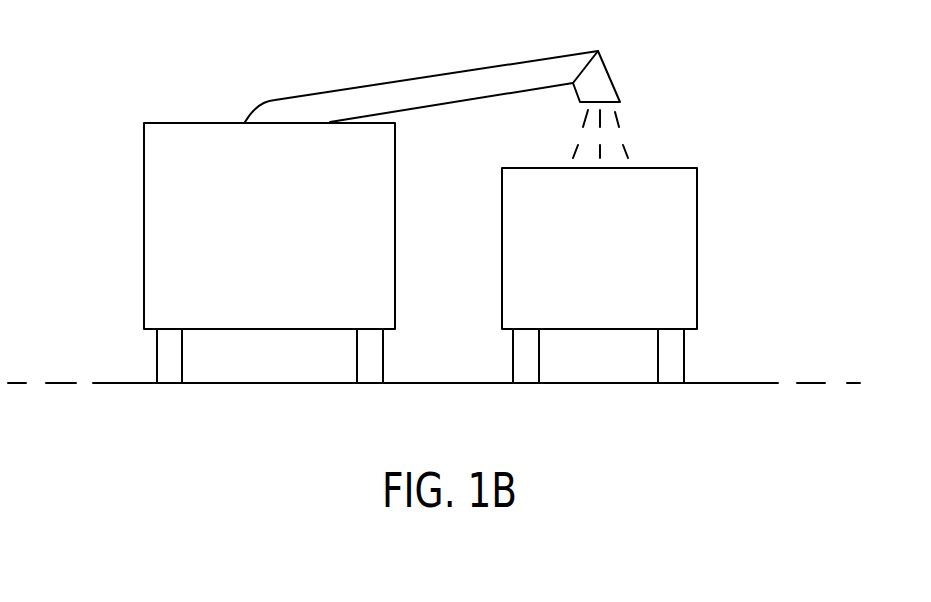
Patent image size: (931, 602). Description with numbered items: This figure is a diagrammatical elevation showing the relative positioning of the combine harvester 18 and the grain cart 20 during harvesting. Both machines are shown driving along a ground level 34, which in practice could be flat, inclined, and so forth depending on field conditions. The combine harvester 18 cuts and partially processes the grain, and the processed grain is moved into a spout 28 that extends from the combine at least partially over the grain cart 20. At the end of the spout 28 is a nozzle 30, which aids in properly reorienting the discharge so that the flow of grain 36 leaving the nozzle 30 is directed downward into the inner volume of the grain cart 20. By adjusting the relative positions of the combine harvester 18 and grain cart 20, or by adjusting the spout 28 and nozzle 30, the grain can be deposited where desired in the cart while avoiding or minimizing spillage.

The combine harvester 18 is at (170, 258).
The grain cart 20 is at (663, 257).
The spout 28 is at (440, 75).
The nozzle 30 is at (611, 74).
The ground level 34 is at (450, 383).
The flow of grain 36 is at (618, 114).